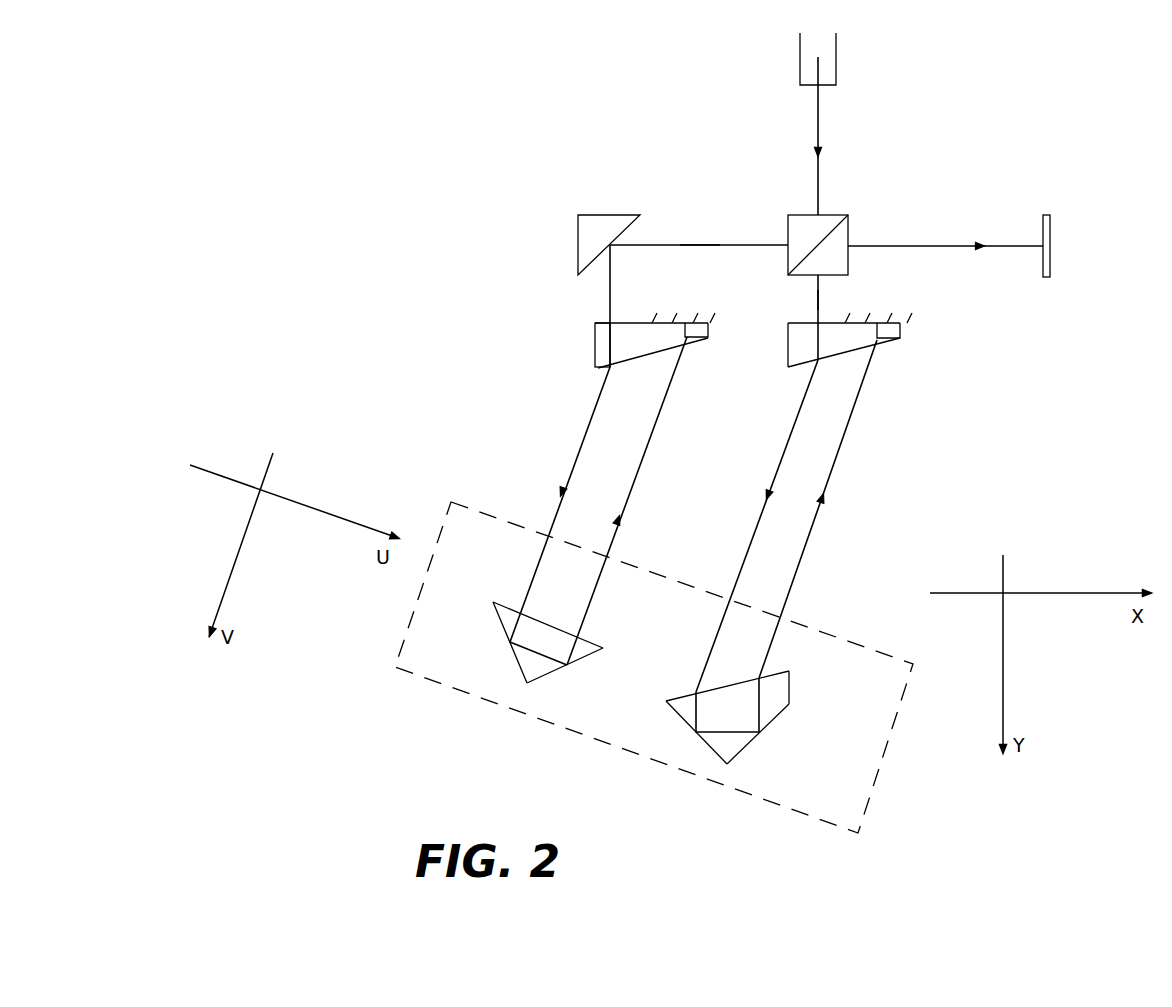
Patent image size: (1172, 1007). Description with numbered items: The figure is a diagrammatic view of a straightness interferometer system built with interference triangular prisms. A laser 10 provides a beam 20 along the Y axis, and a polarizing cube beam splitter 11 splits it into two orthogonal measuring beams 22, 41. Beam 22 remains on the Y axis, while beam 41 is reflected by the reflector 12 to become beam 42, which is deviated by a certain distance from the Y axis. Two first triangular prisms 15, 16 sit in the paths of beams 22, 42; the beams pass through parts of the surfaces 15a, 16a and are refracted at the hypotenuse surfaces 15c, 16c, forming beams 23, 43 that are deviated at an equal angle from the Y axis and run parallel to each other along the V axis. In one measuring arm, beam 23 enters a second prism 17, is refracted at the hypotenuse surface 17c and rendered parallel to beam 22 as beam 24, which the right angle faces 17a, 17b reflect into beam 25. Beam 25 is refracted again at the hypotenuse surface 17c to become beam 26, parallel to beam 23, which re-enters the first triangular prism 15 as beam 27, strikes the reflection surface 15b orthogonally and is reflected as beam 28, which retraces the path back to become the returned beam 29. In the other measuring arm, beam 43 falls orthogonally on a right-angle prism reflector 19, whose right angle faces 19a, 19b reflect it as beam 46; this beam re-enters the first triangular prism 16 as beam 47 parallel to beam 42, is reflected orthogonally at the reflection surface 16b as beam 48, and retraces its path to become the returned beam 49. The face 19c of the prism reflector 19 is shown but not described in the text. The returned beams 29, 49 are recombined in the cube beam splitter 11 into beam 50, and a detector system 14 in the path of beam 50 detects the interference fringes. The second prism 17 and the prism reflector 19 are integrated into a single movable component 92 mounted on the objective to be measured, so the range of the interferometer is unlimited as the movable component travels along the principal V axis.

The laser 10 is at (838, 60).
The beam 20 is at (818, 122).
The reflector 12 is at (600, 214).
The measuring beam 41 is at (736, 245).
The returned beam 49 is at (695, 247).
The polarizing cube beam splitter 11 is at (835, 215).
The combined beam 50 is at (905, 245).
The detector system 14 is at (1047, 213).
The deviated beam 42 is at (607, 302).
The measuring beam 22 is at (820, 283).
The returned beam 29 is at (820, 300).
The first triangular prism 16 is at (641, 351).
The surface 16a is at (595, 322).
The reflection surface 16b is at (700, 322).
The hypotenuse surface 16c is at (680, 349).
The beam 47 is at (727, 350).
The reflected beam 48 is at (690, 338).
The first triangular prism 15 is at (850, 352).
The surface 15a is at (798, 322).
The reflection surface 15b is at (902, 322).
The hypotenuse surface 15c is at (846, 350).
The beam 27 is at (919, 350).
The reflected beam 28 is at (888, 340).
The measuring arm beam 43 is at (570, 468).
The reflected beam 46 is at (642, 463).
The measuring arm beam 23 is at (773, 473).
The beam 26 is at (833, 470).
The right-angle prism reflector 19 is at (526, 620).
The right angle face 19a is at (513, 664).
The right angle face 19b is at (551, 673).
The entrance face of retroreflector 19 19c is at (508, 602).
The second prism 17 is at (744, 708).
The right angle face 17a is at (690, 717).
The right angle face 17b is at (752, 742).
The hypotenuse surface 17c is at (728, 686).
The beam 24 is at (695, 704).
The reflected beam 25 is at (790, 692).
The movable component 92 is at (876, 797).